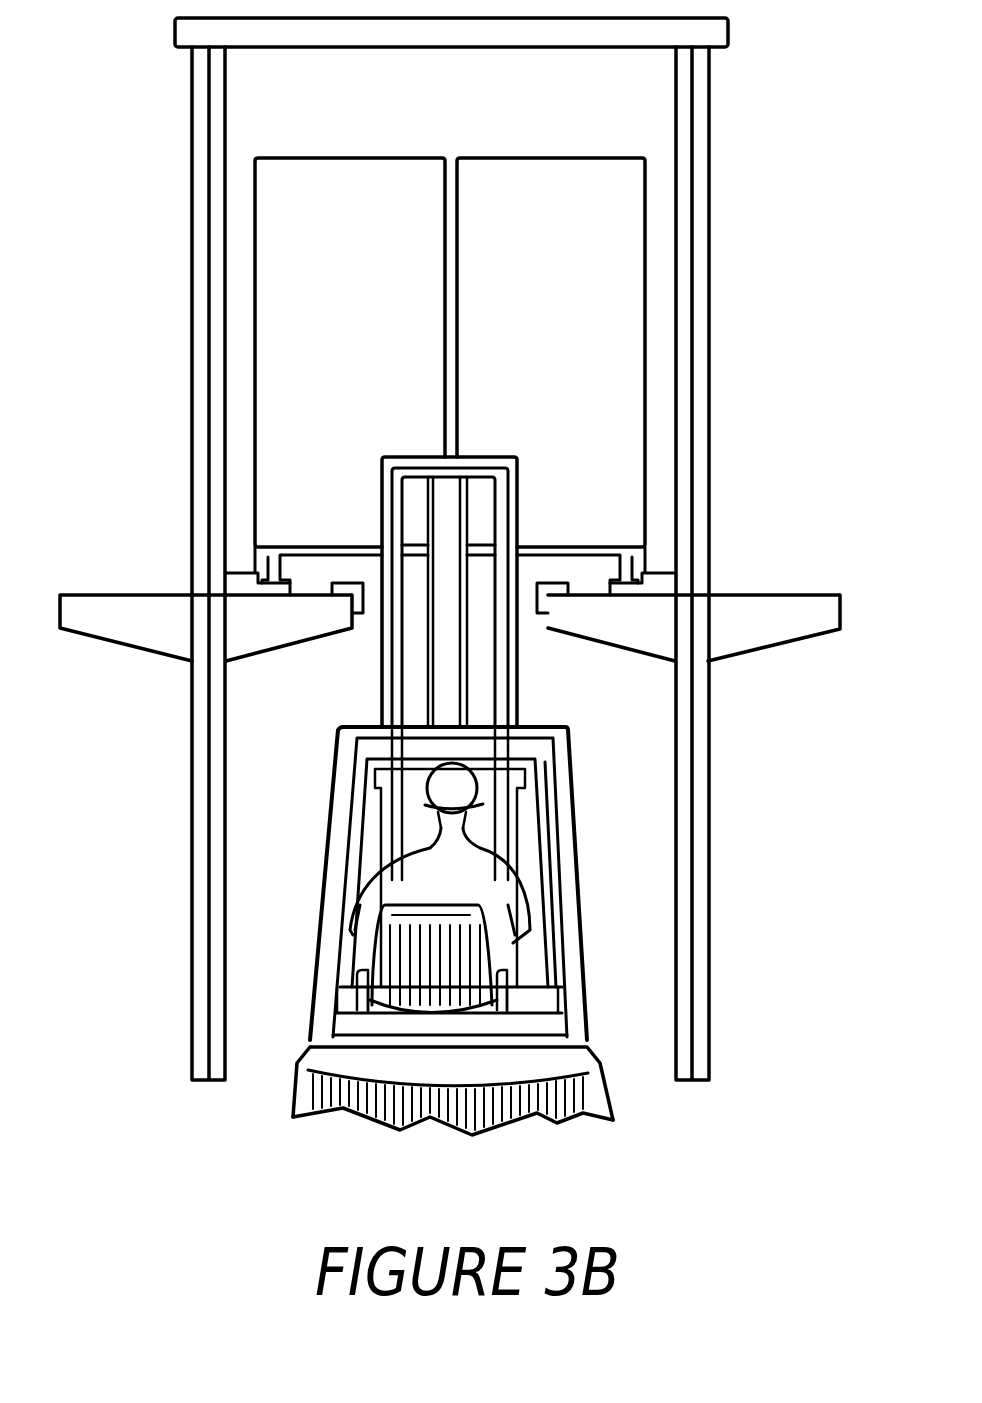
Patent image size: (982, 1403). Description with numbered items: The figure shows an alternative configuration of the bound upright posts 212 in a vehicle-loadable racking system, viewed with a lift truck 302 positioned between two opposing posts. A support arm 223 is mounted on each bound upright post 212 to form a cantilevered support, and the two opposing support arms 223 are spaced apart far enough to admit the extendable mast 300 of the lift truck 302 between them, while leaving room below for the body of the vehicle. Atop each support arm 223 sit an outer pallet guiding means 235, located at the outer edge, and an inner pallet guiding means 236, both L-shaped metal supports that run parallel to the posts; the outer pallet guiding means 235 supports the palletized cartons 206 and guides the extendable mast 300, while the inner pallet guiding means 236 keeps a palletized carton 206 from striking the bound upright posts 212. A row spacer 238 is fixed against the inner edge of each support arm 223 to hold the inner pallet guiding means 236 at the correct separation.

The bound upright posts 212 is at (203, 307).
The palletized carton 206 is at (383, 382).
The inner pallet guiding means 236 is at (253, 563).
The row spacer 238 is at (237, 578).
The support arm 223 is at (278, 635).
The outer pallet guiding means 235 is at (366, 610).
The extendable mast 300 is at (428, 686).
The lift truck 302 is at (568, 930).